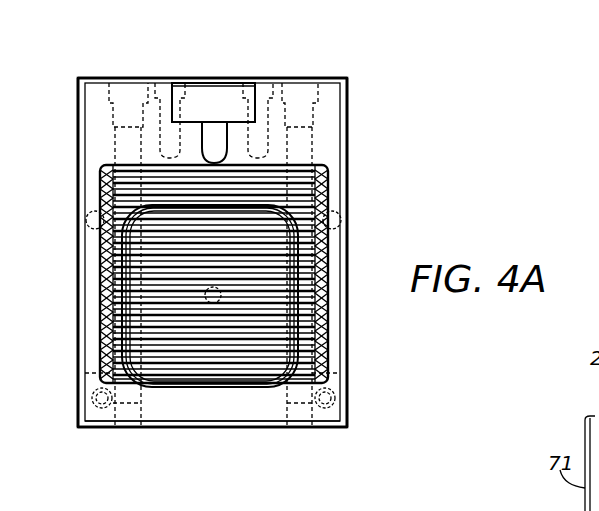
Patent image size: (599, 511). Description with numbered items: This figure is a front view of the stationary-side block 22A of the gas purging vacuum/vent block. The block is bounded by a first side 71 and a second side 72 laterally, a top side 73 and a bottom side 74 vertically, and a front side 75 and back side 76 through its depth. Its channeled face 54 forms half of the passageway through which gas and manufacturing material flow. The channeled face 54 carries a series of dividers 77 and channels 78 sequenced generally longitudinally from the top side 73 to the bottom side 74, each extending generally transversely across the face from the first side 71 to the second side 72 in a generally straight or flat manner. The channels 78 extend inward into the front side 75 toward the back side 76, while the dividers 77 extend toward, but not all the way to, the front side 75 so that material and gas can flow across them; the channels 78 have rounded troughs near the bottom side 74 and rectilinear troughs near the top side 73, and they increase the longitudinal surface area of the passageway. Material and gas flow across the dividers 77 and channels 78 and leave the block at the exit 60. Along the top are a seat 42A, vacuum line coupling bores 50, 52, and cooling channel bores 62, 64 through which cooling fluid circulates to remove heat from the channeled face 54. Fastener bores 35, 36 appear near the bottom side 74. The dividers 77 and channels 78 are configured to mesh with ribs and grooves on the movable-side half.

The stationary-side block 22A is at (330, 86).
The fastener bore 35 is at (92, 396).
The fastener bore 36 is at (340, 400).
The seat 42A is at (197, 90).
The vacuum line coupling bore 50 is at (167, 88).
The vacuum line coupling bore 52 is at (262, 88).
The channeled face 54 is at (325, 200).
The exit 60 is at (217, 127).
The cooling channel bore 62 is at (297, 98).
The cooling channel bore 64 is at (133, 92).
The first side 71 is at (76, 152).
The second side 72 is at (352, 119).
The top side 73 is at (85, 70).
The bottom side 74 is at (176, 438).
The front side 75 is at (272, 412).
The back side 76 is at (585, 436).
The divider 77 is at (340, 268).
The channel 78 is at (340, 318).